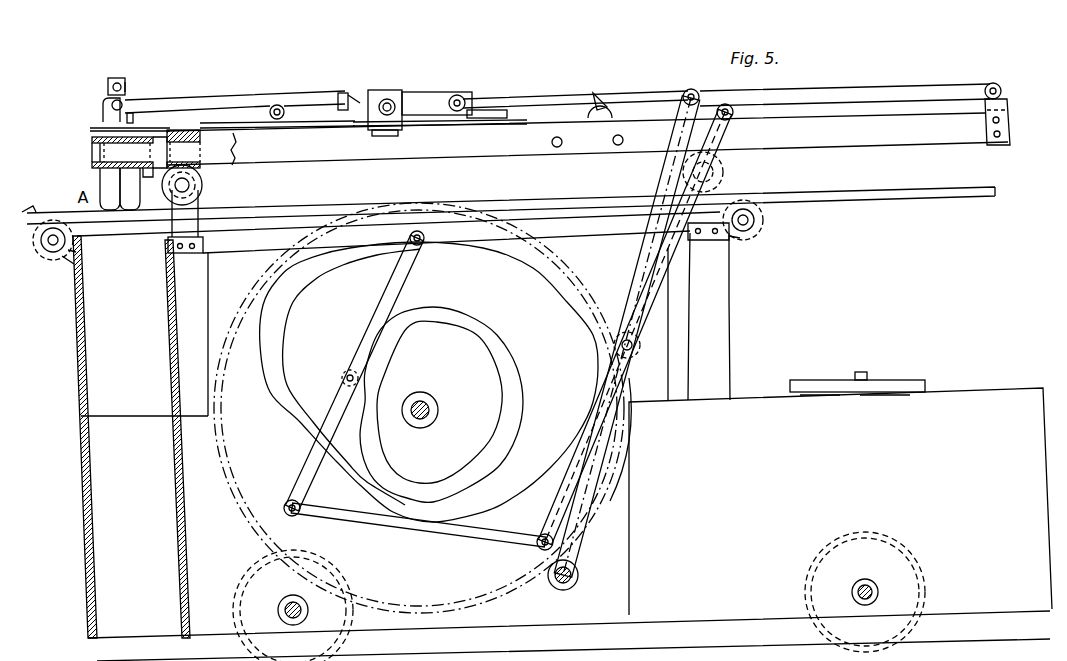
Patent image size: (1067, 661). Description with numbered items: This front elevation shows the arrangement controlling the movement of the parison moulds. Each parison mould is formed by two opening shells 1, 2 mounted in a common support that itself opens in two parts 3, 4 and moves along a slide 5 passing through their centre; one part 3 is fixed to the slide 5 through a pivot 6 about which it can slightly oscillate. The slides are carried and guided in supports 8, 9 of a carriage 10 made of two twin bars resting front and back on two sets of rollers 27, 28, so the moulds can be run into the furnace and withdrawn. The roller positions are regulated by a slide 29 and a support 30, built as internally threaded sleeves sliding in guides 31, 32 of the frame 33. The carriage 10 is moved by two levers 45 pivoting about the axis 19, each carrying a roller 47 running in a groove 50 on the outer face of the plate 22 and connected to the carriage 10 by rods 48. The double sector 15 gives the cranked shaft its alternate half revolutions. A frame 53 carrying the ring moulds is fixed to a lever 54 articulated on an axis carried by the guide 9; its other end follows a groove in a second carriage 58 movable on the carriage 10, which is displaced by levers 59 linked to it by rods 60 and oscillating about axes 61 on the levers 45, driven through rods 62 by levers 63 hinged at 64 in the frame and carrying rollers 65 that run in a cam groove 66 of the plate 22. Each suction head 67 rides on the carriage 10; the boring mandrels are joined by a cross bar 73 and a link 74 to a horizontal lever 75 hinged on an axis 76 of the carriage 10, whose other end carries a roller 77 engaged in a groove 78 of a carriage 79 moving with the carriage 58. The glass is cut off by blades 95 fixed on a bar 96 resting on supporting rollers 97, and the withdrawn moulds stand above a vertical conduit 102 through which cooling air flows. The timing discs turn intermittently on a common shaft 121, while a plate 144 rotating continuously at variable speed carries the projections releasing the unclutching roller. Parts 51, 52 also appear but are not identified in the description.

The opening shell 1 is at (110, 189).
The opening shell 2 is at (130, 189).
The support part 3 is at (96, 140).
The support part 4 is at (149, 177).
The slide 5 is at (201, 150).
The pivot 6 is at (92, 154).
The support 8 is at (180, 129).
The support 9 is at (386, 98).
The carriage 10 is at (587, 139).
The double sector 15 is at (603, 95).
The axis 19 is at (564, 590).
The plate 22 is at (419, 408).
The rollers 27 is at (203, 186).
The rollers 28 is at (683, 171).
The slide 29 is at (185, 221).
The support 30 is at (698, 261).
The guide 31 is at (182, 439).
The guide 32 is at (699, 349).
The frame 33 is at (840, 501).
The lever 45 is at (586, 541).
The roller 47 is at (630, 436).
The rod 48 is at (846, 92).
The groove 50 is at (266, 342).
The bracket 51 is at (103, 120).
The plate 52 is at (131, 112).
The frame 53 is at (90, 129).
The lever 54 is at (255, 130).
The second carriage 58 is at (484, 126).
The lever 59 is at (718, 137).
The rod 60 is at (546, 105).
The axis 61 is at (633, 349).
The rod 62 is at (368, 514).
The lever 63 is at (377, 315).
The hinge 64 is at (419, 246).
The roller 65 is at (346, 376).
The cam groove 66 is at (441, 405).
The suction head 67 is at (112, 104).
The cross bar 73 is at (114, 78).
The link 74 is at (108, 84).
The horizontal lever 75 is at (218, 108).
The axis 76 is at (276, 105).
The roller 77 is at (385, 143).
The groove 78 is at (342, 93).
The carriage 79 is at (428, 100).
The blade 95 is at (30, 200).
The bar 96 is at (293, 211).
The supporting roller 97 is at (53, 262).
The vertical conduit 102 is at (140, 437).
The common shaft 121 is at (438, 411).
The plate 144 is at (888, 380).